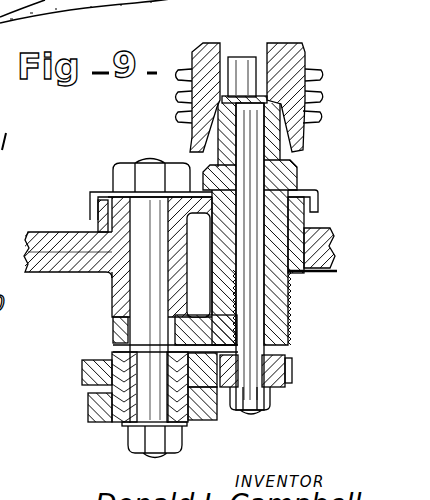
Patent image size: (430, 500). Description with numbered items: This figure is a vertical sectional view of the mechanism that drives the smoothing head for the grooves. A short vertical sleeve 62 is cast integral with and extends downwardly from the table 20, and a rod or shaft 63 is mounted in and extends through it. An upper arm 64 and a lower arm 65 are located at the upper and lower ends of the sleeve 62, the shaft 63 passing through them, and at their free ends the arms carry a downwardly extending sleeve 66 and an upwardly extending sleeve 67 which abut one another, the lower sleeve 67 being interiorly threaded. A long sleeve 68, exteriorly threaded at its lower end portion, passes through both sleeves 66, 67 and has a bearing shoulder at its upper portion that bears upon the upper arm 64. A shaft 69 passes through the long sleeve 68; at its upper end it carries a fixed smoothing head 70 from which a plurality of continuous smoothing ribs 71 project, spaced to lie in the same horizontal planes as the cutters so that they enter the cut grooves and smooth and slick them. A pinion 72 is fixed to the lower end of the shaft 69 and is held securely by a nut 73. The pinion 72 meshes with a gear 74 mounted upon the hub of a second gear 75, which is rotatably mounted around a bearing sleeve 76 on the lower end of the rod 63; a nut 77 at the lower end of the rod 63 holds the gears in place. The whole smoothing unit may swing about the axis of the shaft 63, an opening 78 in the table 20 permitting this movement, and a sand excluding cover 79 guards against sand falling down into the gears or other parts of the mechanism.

The table 20 is at (60, 270).
The short vertical sleeve 62 is at (118, 288).
The rod or shaft 63 is at (136, 252).
The upper arm 64 is at (195, 198).
The lower arm 65 is at (190, 323).
The downwardly extending sleeve 66 is at (282, 228).
The upwardly extending sleeve 67 is at (285, 297).
The long sleeve 68 is at (285, 195).
The shaft 69 is at (252, 165).
The smoothing head 70 is at (283, 60).
The smoothing ribs 71 is at (320, 113).
The pinion 72 is at (293, 370).
The nut 73 is at (272, 402).
The gear 74 is at (90, 370).
The second gear 75 is at (107, 413).
The bearing sleeve 76 is at (173, 390).
The nut 77 is at (176, 445).
The opening 78 is at (293, 257).
The sand excluding cover 79 is at (313, 194).